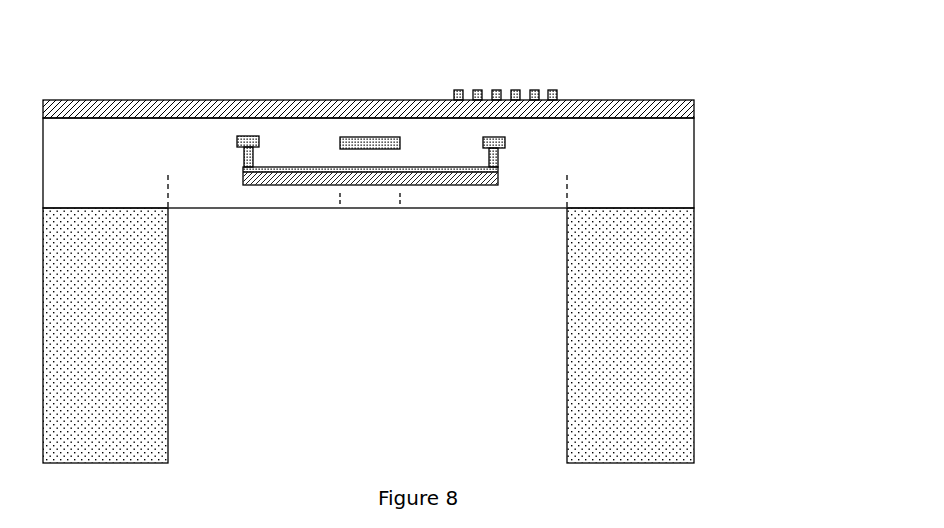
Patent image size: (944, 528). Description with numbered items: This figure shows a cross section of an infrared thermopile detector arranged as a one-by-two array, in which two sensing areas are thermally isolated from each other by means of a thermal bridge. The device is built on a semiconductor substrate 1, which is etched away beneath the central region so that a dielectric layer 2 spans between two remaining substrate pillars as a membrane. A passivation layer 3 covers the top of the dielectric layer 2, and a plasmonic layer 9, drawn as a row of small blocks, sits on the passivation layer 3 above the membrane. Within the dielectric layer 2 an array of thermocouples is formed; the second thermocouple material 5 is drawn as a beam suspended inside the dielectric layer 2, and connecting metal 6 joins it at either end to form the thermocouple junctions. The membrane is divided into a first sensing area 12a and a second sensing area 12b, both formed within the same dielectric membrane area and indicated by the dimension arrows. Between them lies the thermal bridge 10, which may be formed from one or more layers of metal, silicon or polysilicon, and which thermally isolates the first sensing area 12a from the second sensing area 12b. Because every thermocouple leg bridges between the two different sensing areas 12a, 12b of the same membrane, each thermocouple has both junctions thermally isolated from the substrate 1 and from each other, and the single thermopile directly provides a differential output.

The semiconductor substrate 1 is at (146, 367).
The dielectric layer 2 is at (670, 163).
The passivation layer 3 is at (684, 111).
The second thermocouple material 5 is at (296, 166).
The connecting metal 6 is at (253, 133).
The plasmonic layer 9 is at (509, 81).
The thermal bridge 10 is at (371, 127).
The first sensing area 12a is at (170, 202).
The second sensing area 12b is at (402, 202).